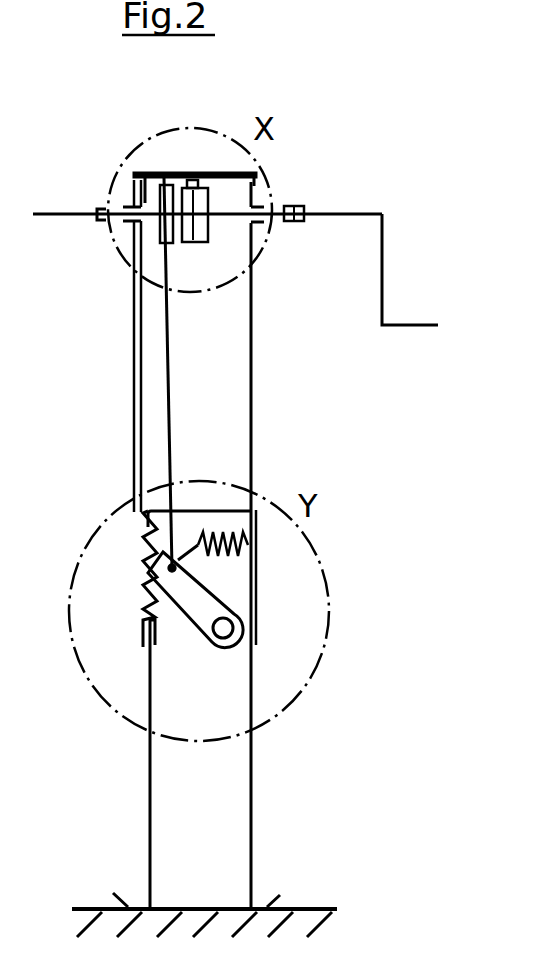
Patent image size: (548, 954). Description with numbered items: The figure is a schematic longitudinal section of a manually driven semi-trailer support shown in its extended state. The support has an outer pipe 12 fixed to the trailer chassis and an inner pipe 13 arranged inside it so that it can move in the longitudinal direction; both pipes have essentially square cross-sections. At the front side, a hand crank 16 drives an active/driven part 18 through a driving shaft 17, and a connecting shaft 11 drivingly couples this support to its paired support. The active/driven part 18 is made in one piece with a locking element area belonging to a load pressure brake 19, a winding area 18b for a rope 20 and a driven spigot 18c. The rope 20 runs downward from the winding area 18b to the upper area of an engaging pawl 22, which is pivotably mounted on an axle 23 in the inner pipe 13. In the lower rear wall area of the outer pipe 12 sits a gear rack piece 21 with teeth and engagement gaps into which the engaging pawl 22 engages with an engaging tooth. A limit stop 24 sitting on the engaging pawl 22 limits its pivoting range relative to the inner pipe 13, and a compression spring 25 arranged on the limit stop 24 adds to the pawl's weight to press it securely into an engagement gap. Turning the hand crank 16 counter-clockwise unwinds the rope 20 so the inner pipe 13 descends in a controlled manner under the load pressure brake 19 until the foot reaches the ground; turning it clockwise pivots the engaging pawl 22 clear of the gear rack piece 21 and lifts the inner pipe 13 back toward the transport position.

The connecting shaft 11 is at (70, 213).
The outer pipe 12 is at (257, 385).
The inner pipe 13 is at (252, 767).
The hand crank 16 is at (383, 253).
The driving shaft 17 is at (280, 208).
The active/driven part 18 is at (153, 203).
The winding area 18b is at (175, 193).
The driven spigot 18c is at (113, 198).
The load pressure brake 19 is at (192, 192).
The rope 20 is at (168, 370).
The gear rack piece 21 is at (140, 580).
The engaging pawl 22 is at (198, 598).
The axle 23 is at (223, 628).
The limit stop 24 is at (230, 530).
The compression spring 25 is at (213, 530).